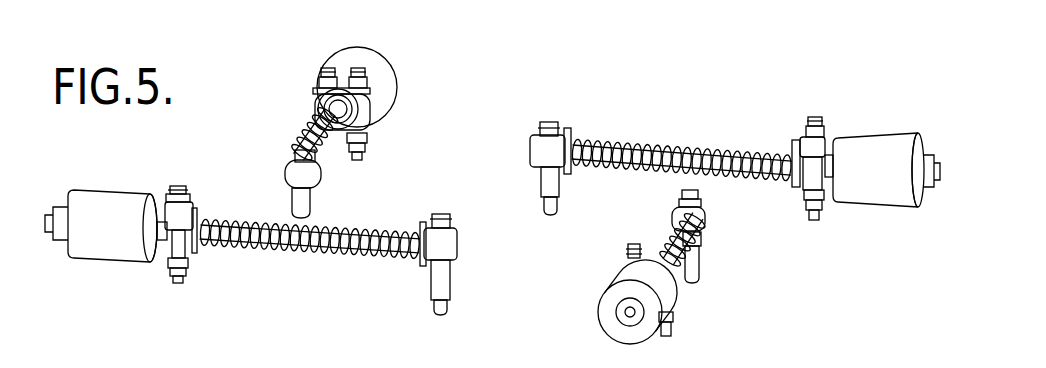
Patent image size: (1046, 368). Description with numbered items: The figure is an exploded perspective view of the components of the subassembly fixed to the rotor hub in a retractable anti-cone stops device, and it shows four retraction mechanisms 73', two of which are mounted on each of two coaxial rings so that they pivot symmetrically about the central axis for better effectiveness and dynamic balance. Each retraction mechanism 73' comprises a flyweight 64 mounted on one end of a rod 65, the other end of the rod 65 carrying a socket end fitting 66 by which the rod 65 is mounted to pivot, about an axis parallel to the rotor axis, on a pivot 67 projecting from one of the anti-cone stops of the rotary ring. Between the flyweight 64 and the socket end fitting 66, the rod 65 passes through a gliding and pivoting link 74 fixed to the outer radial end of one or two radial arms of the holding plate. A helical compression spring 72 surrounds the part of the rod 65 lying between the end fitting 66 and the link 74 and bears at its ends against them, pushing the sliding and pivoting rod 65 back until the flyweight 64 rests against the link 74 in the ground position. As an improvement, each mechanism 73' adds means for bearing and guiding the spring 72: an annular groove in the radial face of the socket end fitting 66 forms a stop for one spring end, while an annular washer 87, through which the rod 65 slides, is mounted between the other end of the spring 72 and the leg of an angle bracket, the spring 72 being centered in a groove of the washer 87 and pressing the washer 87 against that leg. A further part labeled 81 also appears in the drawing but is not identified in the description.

The flyweight 64 is at (117, 230).
The rod 65 is at (384, 248).
The socket end fitting 66 is at (446, 248).
The pivot 67 is at (307, 202).
The helical compression spring 72 is at (373, 236).
The retraction mechanism 73' is at (492, 178).
The gliding and pivoting link 74 is at (377, 110).
The bolt 81 is at (181, 278).
The annular washer 87 is at (188, 217).